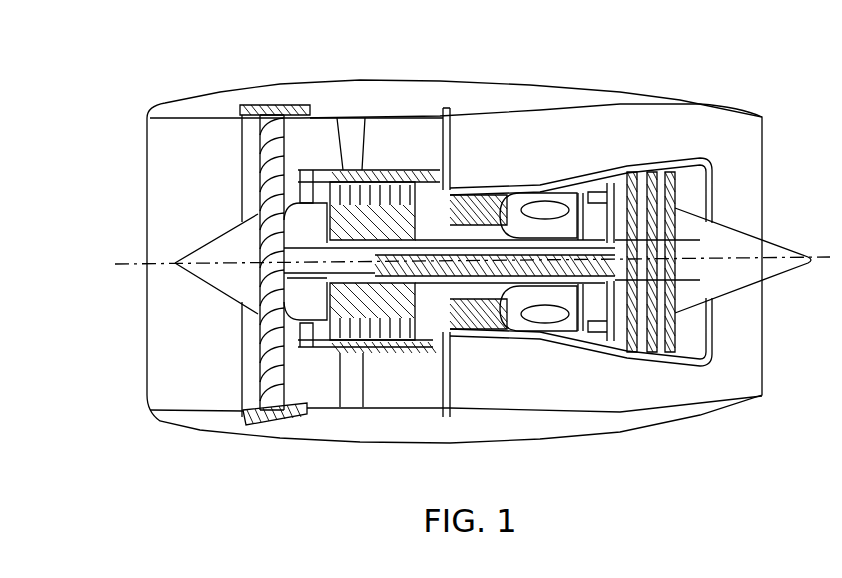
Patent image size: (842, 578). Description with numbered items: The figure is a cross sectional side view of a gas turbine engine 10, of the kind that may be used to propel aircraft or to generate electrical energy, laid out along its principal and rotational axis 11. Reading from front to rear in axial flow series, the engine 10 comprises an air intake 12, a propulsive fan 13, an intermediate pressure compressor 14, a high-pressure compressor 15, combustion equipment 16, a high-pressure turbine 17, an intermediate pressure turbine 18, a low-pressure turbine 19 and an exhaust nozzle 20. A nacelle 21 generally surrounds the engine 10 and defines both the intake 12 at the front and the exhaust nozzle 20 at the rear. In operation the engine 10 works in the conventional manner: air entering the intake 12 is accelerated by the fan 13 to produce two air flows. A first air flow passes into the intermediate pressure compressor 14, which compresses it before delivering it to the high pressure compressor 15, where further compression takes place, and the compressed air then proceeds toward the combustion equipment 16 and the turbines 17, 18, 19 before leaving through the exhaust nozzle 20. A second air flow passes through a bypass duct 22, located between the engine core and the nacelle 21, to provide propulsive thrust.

The gas turbine engine 10 is at (122, 151).
The principal and rotational axis 11 is at (160, 262).
The air intake 12 is at (208, 118).
The propulsive fan 13 is at (260, 362).
The intermediate pressure compressor 14 is at (390, 333).
The high-pressure compressor 15 is at (480, 197).
The combustion equipment 16 is at (522, 339).
The high-pressure turbine 17 is at (580, 335).
The intermediate pressure turbine 18 is at (608, 174).
The low-pressure turbine 19 is at (618, 350).
The exhaust nozzle 20 is at (763, 398).
The nacelle 21 is at (595, 87).
The bypass duct 22 is at (380, 262).